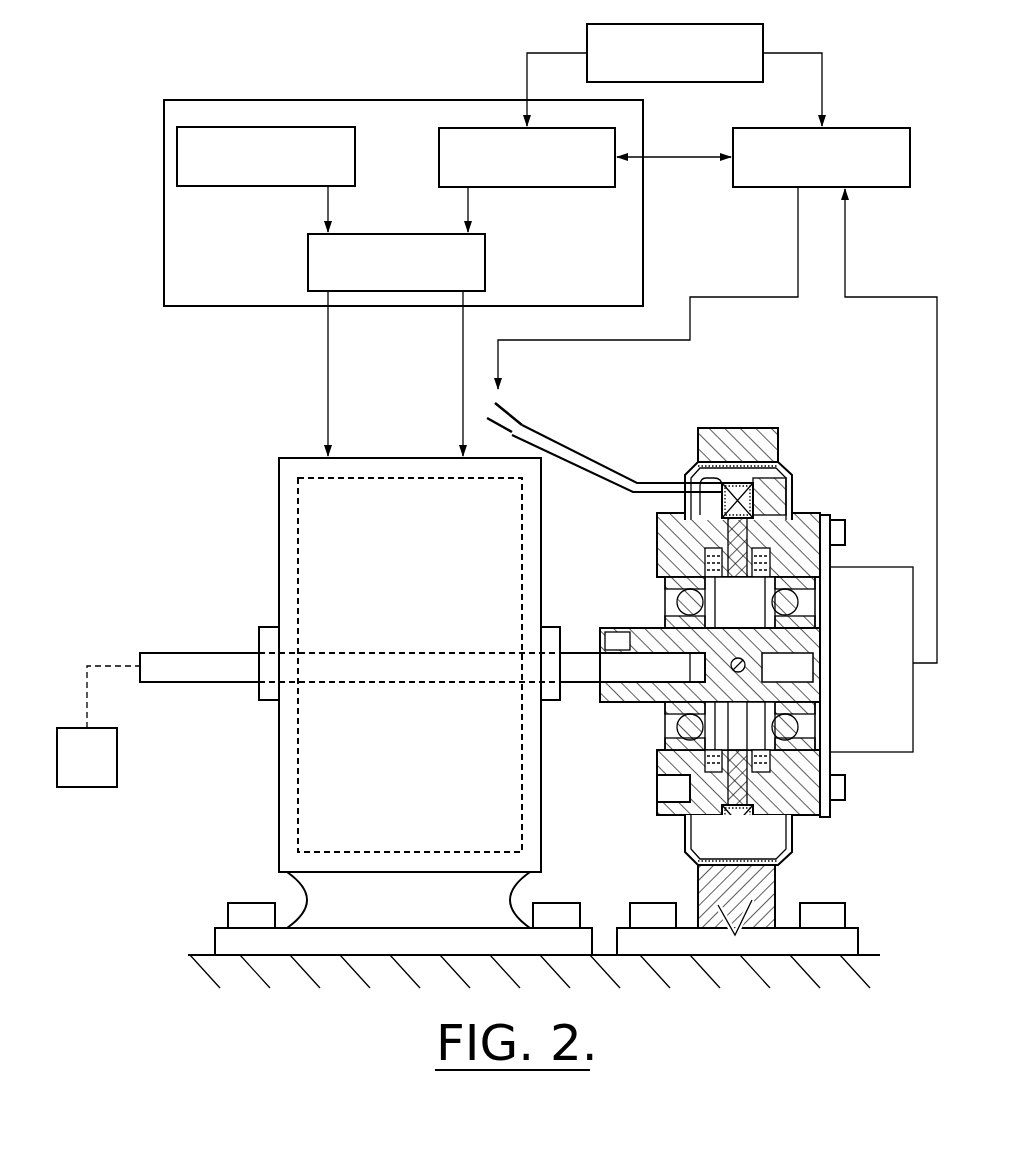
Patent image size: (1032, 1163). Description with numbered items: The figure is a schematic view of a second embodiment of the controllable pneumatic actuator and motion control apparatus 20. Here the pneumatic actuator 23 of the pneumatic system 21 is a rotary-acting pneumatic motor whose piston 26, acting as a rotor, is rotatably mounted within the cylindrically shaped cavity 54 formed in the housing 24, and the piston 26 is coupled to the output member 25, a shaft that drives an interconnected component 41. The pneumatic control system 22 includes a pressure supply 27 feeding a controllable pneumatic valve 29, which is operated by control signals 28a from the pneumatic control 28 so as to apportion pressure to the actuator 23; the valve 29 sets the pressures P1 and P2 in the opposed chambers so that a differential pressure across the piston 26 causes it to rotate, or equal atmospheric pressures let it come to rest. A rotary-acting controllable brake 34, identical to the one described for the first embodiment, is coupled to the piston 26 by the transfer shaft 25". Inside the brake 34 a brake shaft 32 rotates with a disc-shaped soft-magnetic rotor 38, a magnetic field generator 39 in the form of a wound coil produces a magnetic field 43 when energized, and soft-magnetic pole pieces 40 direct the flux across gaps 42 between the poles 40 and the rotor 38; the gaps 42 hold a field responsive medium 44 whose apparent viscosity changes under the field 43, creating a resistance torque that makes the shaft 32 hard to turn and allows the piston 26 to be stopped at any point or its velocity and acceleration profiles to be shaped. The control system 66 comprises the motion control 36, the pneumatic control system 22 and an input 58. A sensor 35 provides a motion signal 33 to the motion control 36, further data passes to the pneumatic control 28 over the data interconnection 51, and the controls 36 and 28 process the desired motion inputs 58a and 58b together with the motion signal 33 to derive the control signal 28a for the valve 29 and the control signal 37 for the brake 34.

The controllable pneumatic actuator and motion control apparatus 20 is at (222, 492).
The pneumatic system 21 is at (300, 322).
The pneumatic control system 22 is at (646, 250).
The pneumatic actuator 23 is at (395, 456).
The housing 24 is at (279, 796).
The output member 25 is at (240, 655).
The piston 26 is at (302, 532).
The pressure supply 27 is at (355, 163).
The pneumatic control 28 is at (560, 187).
The control signal 28a is at (470, 204).
The controllable pneumatic valve 29 is at (486, 260).
The brake shaft 32 is at (614, 700).
The motion signal 33 is at (937, 480).
The rotary-acting controllable brake 34 is at (790, 450).
The sensor 35 is at (894, 672).
The motion control 36 is at (870, 128).
The control signal 37 is at (692, 318).
The rotor 38 is at (690, 550).
The magnetic field generator 39 is at (725, 500).
The pole pieces 40 is at (735, 520).
The interconnected component 41 is at (118, 756).
The gaps 42 is at (722, 797).
The magnetic field 43 is at (766, 836).
The field responsive medium 44 is at (776, 752).
The data interconnection 51 is at (683, 160).
The cavity 54 is at (300, 727).
The input 58 is at (765, 40).
The desired motion input data 58a is at (826, 68).
The desired motion input data 58b is at (547, 52).
The control system 66 is at (472, 72).
The pressure P1 is at (349, 376).
The pressure P2 is at (483, 376).